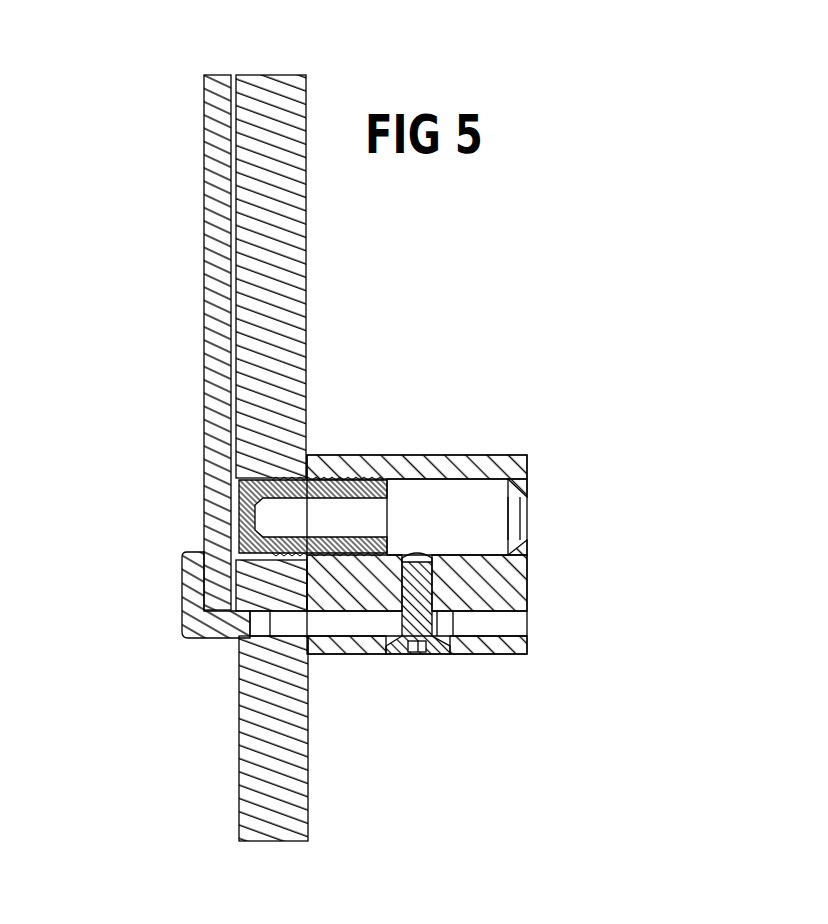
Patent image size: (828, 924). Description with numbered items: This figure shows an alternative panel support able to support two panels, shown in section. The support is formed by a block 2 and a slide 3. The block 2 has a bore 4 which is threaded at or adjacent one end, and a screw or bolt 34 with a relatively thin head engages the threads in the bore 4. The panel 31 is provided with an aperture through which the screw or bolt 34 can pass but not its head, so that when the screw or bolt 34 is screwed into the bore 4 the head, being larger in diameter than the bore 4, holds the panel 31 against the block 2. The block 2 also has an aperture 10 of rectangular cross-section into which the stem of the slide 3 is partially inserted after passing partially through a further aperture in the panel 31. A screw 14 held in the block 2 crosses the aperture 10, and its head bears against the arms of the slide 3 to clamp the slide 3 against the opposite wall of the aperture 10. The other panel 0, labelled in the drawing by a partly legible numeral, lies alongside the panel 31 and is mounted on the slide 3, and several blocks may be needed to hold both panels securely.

The first layer of plate 0 is at (213, 330).
The panel 31 is at (300, 308).
The block 2 is at (477, 467).
The bore 4 is at (483, 528).
The screw or bolt 34 is at (246, 499).
The aperture 10 is at (512, 622).
The screw 14 is at (437, 645).
The slide 3 is at (200, 640).